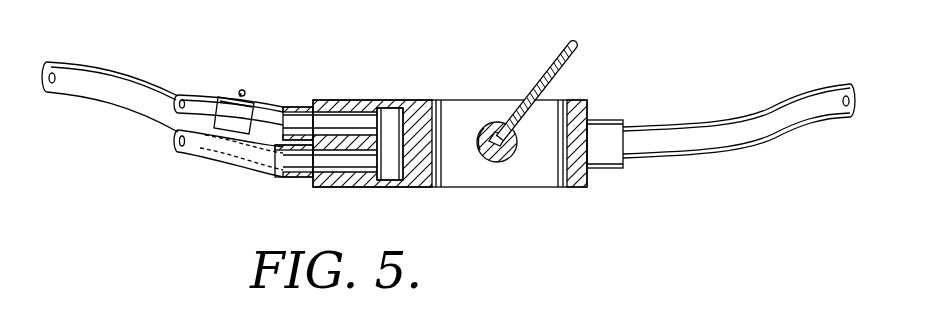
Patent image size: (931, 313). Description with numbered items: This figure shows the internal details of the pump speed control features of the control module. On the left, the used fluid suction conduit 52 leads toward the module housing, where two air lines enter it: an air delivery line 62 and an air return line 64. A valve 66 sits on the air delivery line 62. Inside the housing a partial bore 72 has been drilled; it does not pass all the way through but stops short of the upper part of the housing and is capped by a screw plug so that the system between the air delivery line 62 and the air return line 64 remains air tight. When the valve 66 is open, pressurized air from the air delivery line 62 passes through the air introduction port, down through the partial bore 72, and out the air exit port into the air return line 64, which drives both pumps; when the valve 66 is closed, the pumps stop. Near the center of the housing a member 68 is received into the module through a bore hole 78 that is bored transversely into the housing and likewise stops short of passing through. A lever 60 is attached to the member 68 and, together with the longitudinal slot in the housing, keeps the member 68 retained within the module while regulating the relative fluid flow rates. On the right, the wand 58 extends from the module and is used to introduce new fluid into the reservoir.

The used fluid suction conduit 52 is at (92, 66).
The wand 58 is at (670, 123).
The lever 60 is at (548, 70).
The air delivery line 62 is at (199, 93).
The air return line 64 is at (212, 160).
The valve 66 is at (253, 100).
The member 68 is at (497, 163).
The partial bore 72 is at (400, 137).
The bore hole 78 is at (480, 160).